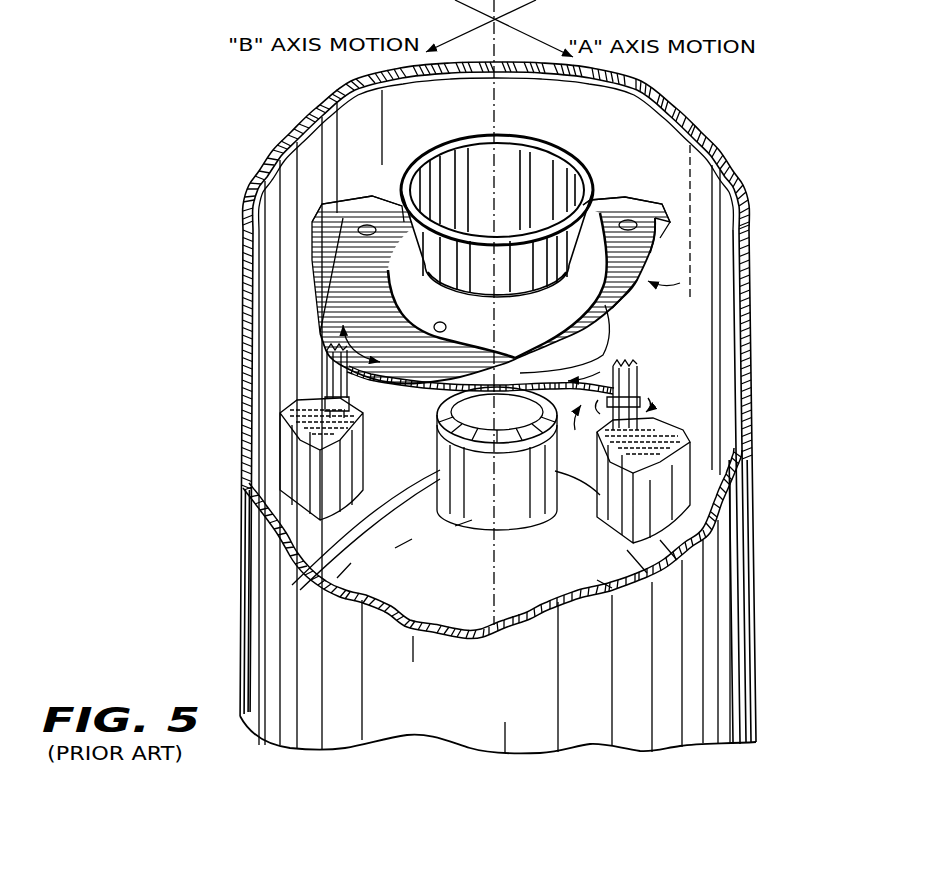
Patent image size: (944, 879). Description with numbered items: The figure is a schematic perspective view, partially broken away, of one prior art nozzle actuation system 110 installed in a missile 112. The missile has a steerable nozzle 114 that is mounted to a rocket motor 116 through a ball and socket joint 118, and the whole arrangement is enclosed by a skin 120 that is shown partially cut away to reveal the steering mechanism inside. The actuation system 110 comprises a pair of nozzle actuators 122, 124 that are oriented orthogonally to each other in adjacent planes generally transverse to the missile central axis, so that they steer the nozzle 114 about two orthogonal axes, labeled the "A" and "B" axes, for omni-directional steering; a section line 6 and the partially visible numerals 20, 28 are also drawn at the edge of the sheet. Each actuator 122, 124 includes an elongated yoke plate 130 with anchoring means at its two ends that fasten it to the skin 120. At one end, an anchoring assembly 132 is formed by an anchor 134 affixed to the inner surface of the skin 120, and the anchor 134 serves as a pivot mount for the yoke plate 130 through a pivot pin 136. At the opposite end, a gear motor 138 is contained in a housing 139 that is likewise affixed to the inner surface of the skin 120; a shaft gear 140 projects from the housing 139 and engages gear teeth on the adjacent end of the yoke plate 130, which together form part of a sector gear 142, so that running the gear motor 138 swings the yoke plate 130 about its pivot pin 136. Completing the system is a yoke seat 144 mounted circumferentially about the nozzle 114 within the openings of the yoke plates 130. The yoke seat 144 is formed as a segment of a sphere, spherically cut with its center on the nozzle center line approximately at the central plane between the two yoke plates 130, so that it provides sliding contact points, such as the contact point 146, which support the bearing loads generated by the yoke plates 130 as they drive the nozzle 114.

The section line 6- 6 is at (518, 167).
The reference (cut off) 20 is at (160, 4).
The reference (cut off) 28 is at (211, 4).
The nozzle actuation system 110 is at (648, 130).
The missile 112 is at (762, 615).
The steerable nozzle 114 is at (422, 160).
The rocket motor 116 is at (550, 558).
The ball and socket joint 118 is at (465, 498).
The skin 120 is at (722, 148).
The nozzle actuator 122 is at (657, 315).
The nozzle actuator 124 is at (548, 445).
The yoke plate 130 is at (648, 272).
The anchoring assembly 132 is at (657, 193).
The anchor 134 is at (326, 206).
The pivot pin 136 is at (333, 218).
The gear motor 138 is at (315, 498).
The housing 139 is at (693, 460).
The shaft gear 140 is at (640, 386).
The sector gear 142 is at (645, 374).
The yoke seat 144 is at (458, 331).
The sliding contact point 146 is at (440, 333).